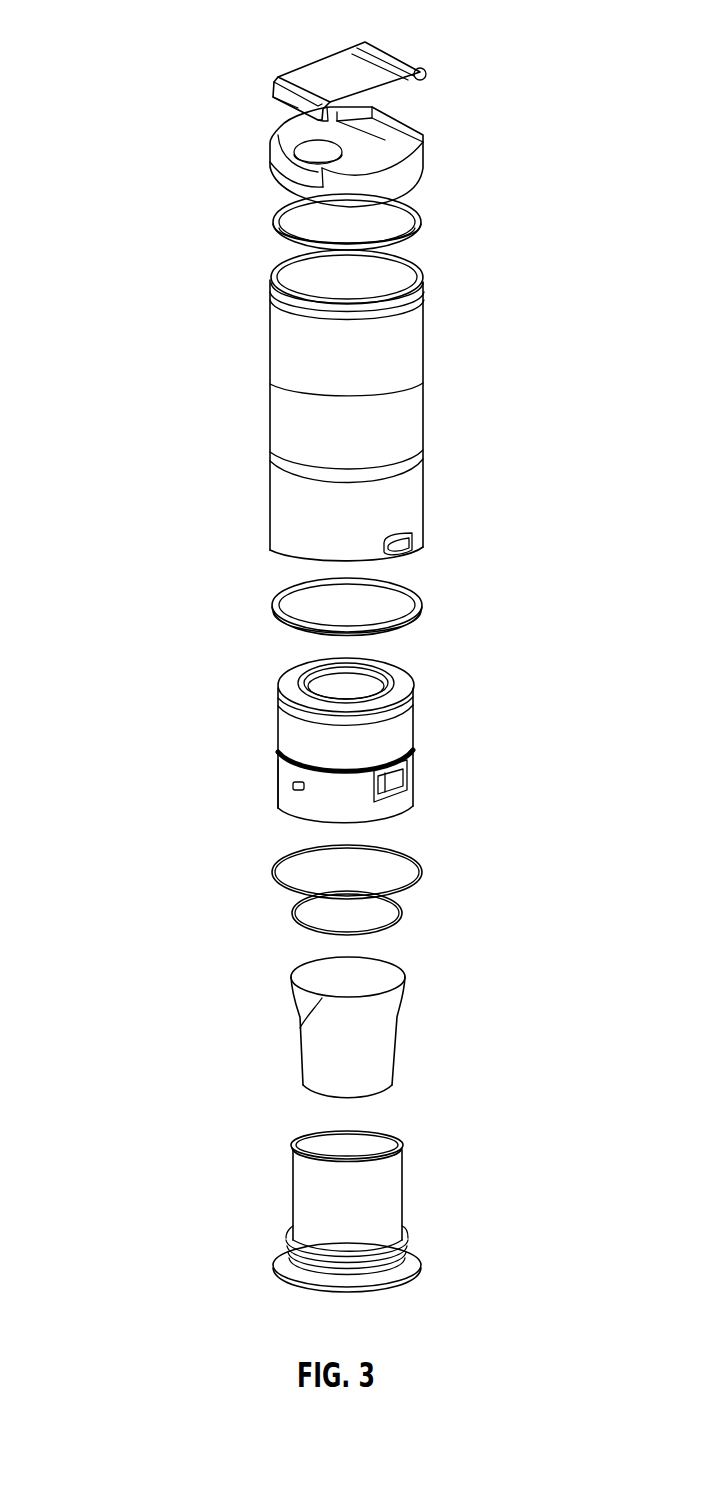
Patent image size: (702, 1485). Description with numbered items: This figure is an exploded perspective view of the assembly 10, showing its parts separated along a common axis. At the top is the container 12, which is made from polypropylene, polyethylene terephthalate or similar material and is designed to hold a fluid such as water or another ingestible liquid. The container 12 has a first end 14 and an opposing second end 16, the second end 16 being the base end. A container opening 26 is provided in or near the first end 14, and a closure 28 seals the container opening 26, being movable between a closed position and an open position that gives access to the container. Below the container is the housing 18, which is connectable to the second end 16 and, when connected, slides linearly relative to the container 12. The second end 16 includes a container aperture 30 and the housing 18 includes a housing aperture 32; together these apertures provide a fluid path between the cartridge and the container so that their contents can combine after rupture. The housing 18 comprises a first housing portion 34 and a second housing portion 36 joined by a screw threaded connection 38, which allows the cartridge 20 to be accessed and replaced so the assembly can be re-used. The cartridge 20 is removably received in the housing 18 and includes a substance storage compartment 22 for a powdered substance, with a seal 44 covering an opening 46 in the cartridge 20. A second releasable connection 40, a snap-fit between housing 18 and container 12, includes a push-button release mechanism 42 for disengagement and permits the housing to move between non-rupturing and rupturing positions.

The assembly 10 is at (172, 318).
The container 12 is at (410, 357).
The first end 14 is at (422, 290).
The second end 16 is at (412, 442).
The housing 18 is at (413, 760).
The cartridge 20 is at (385, 1037).
The substance storage compartment 22 is at (383, 1060).
The container opening 26 is at (268, 183).
The closure 28 is at (302, 75).
The container aperture 30 is at (278, 574).
The housing aperture 32 is at (358, 690).
The first housing portion 34 is at (383, 1218).
The second housing portion 36 is at (285, 772).
The screw threaded connection 38 is at (400, 1268).
The second releasable connection 40 is at (452, 666).
The push-button release mechanism 42 is at (417, 551).
The seal 44 is at (387, 975).
The opening 46 is at (322, 1000).